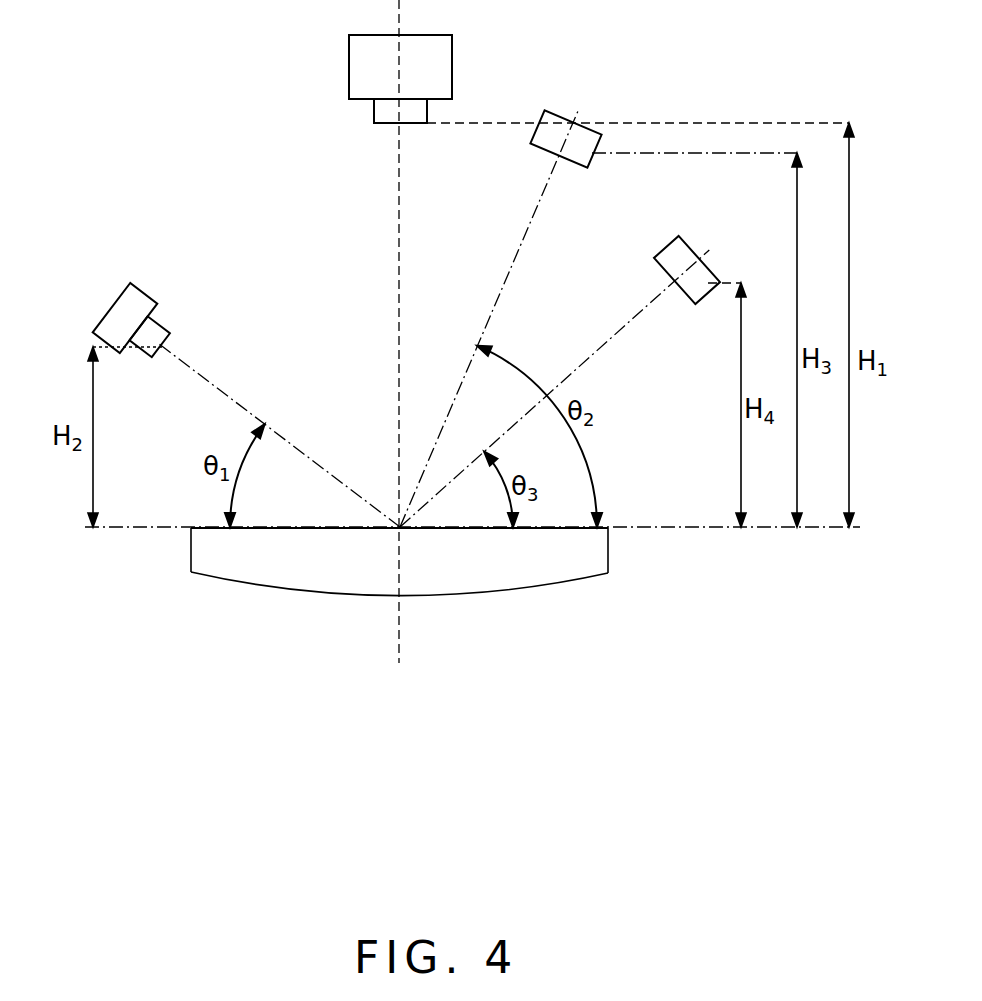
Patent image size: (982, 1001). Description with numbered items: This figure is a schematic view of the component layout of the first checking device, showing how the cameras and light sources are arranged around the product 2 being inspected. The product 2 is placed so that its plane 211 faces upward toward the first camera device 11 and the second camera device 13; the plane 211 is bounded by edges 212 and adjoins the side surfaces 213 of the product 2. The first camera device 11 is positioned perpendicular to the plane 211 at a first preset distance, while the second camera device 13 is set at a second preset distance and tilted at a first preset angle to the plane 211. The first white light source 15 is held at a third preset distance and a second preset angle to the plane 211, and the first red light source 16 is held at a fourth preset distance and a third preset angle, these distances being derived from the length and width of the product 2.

The first camera device 11 is at (437, 46).
The second camera device 13 is at (122, 312).
The first white light source 15 is at (547, 117).
The first red light source 16 is at (692, 299).
The product 2 is at (419, 597).
The plane 211 is at (290, 529).
The edges 212 is at (609, 529).
The side surfaces 213 is at (185, 547).